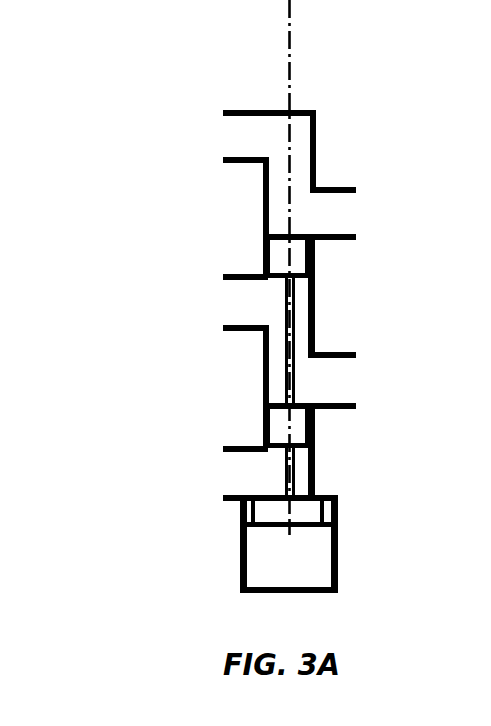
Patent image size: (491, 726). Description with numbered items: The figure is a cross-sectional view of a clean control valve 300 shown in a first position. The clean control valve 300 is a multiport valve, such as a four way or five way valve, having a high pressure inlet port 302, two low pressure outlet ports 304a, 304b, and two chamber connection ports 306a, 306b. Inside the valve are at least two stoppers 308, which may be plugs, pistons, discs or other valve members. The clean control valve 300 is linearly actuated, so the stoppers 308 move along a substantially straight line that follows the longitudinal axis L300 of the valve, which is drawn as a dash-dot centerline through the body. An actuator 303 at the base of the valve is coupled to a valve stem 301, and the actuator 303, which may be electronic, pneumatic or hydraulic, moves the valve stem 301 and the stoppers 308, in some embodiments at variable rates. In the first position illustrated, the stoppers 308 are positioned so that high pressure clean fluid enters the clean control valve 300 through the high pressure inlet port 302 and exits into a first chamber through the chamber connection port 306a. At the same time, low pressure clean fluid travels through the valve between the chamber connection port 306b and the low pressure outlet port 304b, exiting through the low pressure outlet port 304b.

The clean control valve 300 is at (205, 67).
The longitudinal axis L300 is at (291, 43).
The low pressure outlet port 304b is at (220, 138).
The chamber connection port 306b is at (340, 221).
The stopper 308 is at (265, 262).
The high pressure inlet port 302 is at (220, 307).
The chamber connection port 306a is at (343, 390).
The low pressure outlet port 304a is at (228, 495).
The valve stem 301 is at (285, 512).
The actuator 303 is at (270, 565).